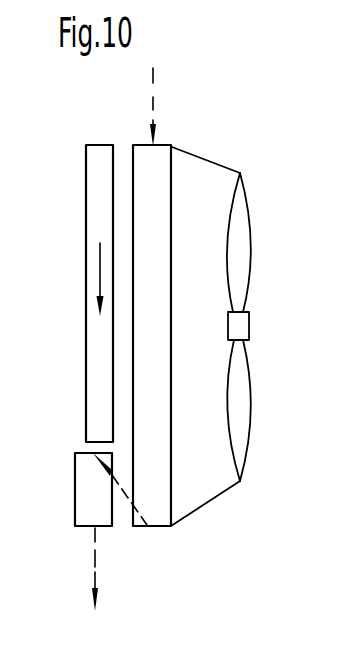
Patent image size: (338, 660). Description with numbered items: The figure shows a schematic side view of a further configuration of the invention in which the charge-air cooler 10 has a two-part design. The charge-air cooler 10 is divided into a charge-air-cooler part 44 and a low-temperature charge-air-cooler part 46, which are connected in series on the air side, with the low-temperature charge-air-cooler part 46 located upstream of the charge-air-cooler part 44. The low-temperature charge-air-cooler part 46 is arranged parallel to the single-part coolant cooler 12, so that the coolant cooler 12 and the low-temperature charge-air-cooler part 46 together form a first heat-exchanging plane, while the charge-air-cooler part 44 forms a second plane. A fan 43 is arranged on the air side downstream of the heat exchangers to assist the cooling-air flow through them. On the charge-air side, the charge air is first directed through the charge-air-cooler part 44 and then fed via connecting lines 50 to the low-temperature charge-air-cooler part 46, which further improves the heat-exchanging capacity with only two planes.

The charge-air cooler 10 is at (165, 157).
The coolant cooler 12 is at (93, 173).
The fan 43 is at (243, 228).
The charge-air-cooler part 44 is at (158, 483).
The low-temperature charge-air-cooler part 46 is at (85, 512).
The connecting lines 50 is at (117, 490).